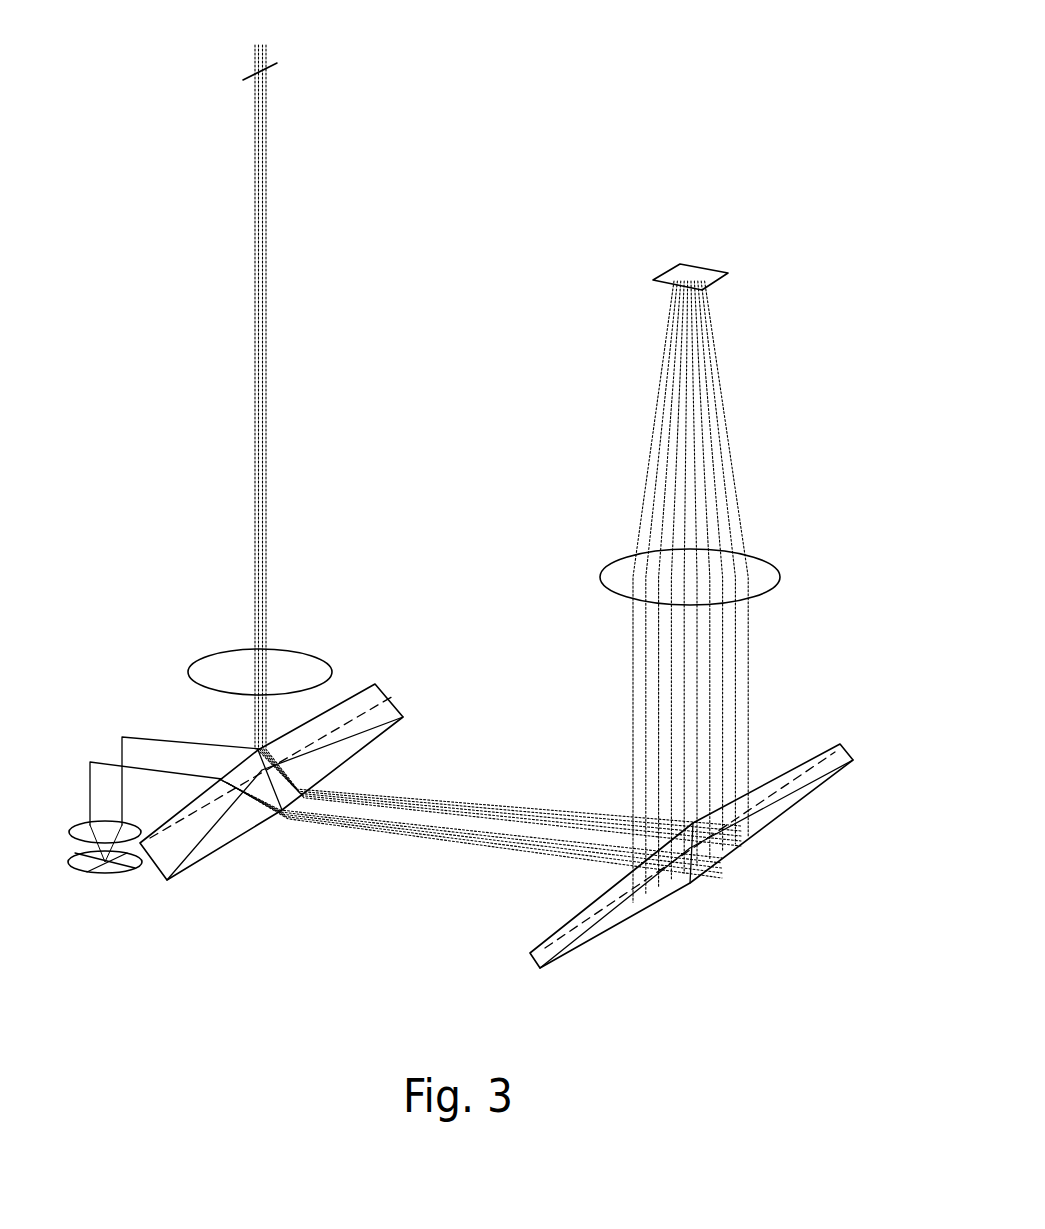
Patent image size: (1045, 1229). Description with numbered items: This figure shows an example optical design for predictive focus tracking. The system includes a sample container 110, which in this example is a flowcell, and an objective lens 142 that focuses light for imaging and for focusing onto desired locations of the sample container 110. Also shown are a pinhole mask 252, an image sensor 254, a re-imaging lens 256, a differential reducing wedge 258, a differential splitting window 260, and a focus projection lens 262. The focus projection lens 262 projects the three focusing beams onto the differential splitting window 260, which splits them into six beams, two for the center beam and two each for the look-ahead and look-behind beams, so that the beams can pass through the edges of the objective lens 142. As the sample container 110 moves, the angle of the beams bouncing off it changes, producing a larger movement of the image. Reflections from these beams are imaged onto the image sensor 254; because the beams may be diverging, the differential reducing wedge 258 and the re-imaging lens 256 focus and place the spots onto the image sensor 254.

The pinhole mask 252 is at (286, 54).
The image sensor 254 is at (703, 258).
The re-imaging lens 256 is at (801, 521).
The focus projection lens 262 is at (301, 641).
The objective lens 142 is at (72, 818).
The sample container 110 is at (101, 890).
The differential splitting window 260 is at (253, 864).
The differential reducing wedge 258 is at (703, 908).